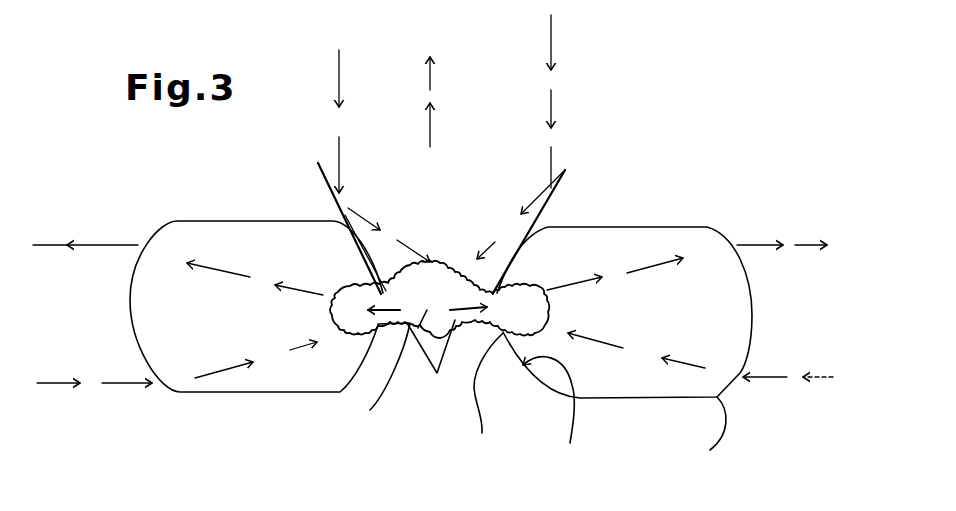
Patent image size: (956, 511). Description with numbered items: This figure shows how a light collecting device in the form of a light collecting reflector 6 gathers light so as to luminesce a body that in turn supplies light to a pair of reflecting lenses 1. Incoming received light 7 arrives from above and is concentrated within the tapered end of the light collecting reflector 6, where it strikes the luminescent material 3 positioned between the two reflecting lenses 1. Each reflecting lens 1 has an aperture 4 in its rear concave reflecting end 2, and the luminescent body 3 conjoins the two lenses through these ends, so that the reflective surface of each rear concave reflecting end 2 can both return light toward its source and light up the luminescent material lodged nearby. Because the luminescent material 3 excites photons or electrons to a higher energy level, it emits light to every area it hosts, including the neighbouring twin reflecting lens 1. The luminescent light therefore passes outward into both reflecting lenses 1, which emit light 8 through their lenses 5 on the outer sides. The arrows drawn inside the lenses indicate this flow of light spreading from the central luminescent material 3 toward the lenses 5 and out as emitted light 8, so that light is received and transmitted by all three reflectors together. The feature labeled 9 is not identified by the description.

The reflecting lens 1 is at (648, 222).
The rear concave reflecting end 2 is at (548, 413).
The luminescent material 3 is at (385, 379).
The aperture 4 is at (488, 396).
The lens 5 is at (708, 435).
The light collecting reflector 6 is at (548, 197).
The received light 7 is at (562, 98).
The emitted light 8 is at (117, 232).
The impact zone 9 is at (455, 313).